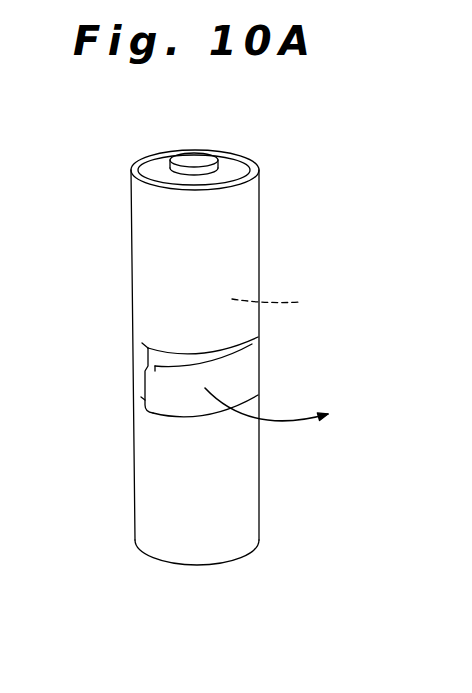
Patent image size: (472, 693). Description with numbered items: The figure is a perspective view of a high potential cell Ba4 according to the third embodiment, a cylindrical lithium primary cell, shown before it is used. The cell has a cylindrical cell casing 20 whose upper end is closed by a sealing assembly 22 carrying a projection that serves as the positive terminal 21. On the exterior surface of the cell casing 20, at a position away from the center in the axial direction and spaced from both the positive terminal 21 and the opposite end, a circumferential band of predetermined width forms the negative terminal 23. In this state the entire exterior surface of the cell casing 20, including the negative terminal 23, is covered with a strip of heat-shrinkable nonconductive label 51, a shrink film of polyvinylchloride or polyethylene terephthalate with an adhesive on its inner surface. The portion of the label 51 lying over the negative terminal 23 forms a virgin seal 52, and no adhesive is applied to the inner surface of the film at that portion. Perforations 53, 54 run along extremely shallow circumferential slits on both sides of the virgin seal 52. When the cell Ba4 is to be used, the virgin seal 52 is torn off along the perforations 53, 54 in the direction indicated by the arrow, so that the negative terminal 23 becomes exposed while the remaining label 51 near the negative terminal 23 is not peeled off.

The high potential cell Ba4 is at (263, 246).
The cell casing 20 is at (285, 307).
The positive terminal 21 is at (204, 161).
The sealing assembly 22 is at (160, 168).
The negative terminal 23 is at (172, 362).
The heat-shrinkable nonconductive label 51 is at (141, 263).
The virgin seal 52 is at (241, 375).
The perforation 53 is at (142, 343).
The perforation 54 is at (141, 397).